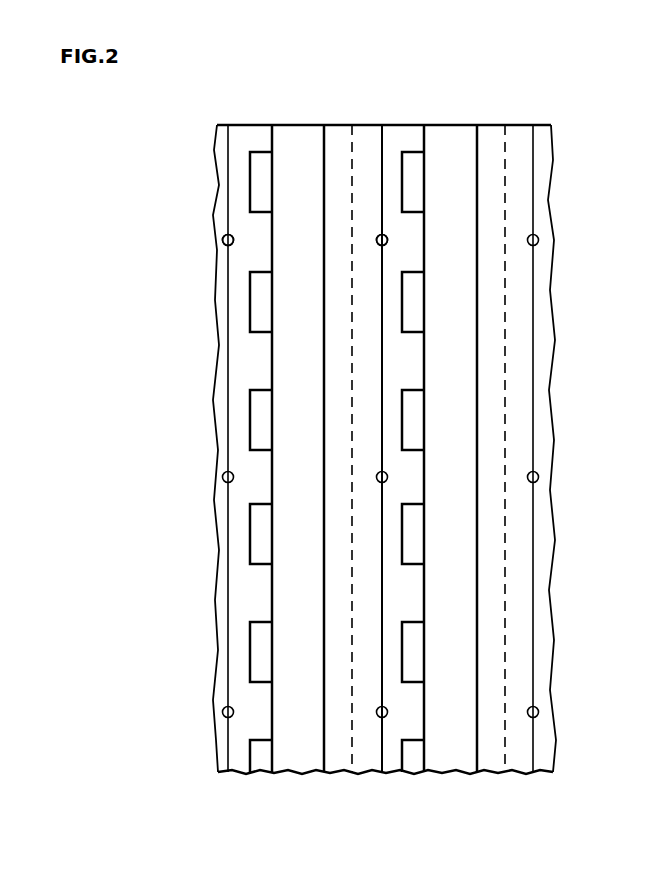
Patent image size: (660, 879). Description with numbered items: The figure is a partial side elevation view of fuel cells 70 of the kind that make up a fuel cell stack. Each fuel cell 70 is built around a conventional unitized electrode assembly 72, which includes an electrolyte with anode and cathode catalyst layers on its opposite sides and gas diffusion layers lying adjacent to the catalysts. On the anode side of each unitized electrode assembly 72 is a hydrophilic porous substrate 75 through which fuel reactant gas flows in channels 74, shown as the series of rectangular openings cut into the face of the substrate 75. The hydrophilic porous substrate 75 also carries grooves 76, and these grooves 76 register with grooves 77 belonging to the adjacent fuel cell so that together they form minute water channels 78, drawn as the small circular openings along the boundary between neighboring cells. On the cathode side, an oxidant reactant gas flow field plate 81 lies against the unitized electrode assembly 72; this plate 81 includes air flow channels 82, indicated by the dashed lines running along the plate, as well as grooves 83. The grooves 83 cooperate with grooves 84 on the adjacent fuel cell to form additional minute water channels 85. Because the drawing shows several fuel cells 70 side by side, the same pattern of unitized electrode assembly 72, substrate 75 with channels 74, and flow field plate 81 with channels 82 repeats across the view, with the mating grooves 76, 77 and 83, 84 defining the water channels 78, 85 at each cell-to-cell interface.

The fuel cell 70 is at (160, 215).
The unitized electrode assembly 72 is at (290, 130).
The channel 74 is at (262, 162).
The hydrophilic porous substrate 75 is at (238, 135).
The groove 76 is at (233, 238).
The groove 77 is at (222, 243).
The minute water channel 78 is at (224, 481).
The oxidant reactant gas flow field plate 81 is at (365, 135).
The air flow channel 82 is at (338, 140).
The groove 83 is at (376, 242).
The groove 84 is at (388, 238).
The minute water channel 85 is at (387, 475).